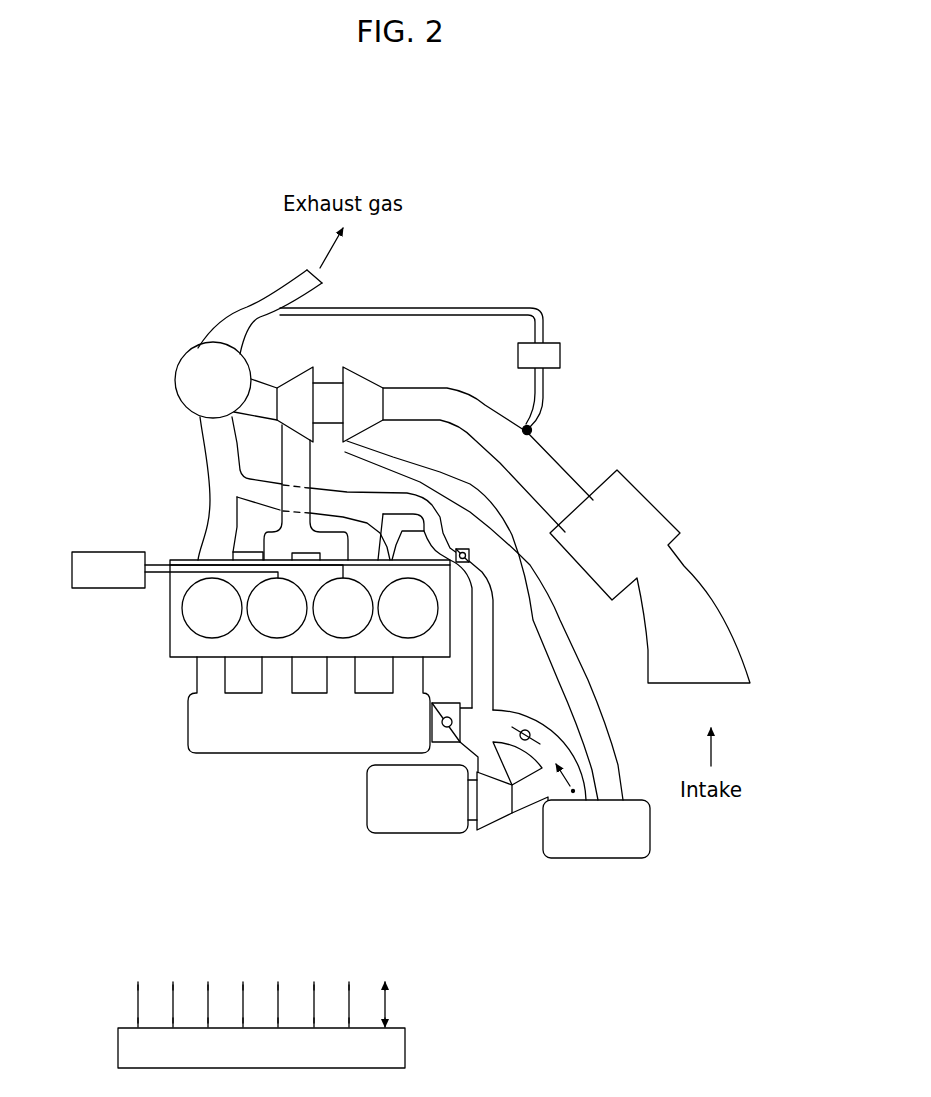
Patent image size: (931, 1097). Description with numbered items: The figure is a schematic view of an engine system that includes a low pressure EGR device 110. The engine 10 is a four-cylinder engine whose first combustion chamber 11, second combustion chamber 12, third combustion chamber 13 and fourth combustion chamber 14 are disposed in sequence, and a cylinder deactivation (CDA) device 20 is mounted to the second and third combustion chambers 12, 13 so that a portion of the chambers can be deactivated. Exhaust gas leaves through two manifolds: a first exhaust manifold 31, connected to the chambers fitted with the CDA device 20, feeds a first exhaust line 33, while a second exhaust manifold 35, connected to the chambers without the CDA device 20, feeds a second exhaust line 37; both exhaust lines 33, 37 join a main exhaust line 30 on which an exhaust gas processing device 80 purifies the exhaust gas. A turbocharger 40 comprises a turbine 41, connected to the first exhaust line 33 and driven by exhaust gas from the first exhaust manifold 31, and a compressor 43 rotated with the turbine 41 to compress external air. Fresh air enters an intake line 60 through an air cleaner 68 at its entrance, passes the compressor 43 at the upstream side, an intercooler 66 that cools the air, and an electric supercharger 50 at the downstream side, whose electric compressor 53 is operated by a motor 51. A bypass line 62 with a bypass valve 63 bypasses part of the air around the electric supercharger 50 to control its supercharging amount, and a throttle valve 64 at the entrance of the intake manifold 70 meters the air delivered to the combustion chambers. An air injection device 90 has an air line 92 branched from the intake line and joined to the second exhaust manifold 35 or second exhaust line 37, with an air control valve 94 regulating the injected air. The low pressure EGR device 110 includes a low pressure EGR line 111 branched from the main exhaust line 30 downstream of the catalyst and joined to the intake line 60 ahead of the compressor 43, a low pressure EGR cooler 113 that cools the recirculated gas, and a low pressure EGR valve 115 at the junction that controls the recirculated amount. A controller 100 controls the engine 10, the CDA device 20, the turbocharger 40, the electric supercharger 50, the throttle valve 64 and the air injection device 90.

The engine 10 is at (266, 684).
The first combustion chamber 11 is at (194, 637).
The second combustion chamber 12 is at (262, 638).
The third combustion chamber 13 is at (328, 638).
The fourth combustion chamber 14 is at (386, 638).
The cylinder deactivation (CDA) device 20 is at (108, 590).
The main exhaust line 30 is at (248, 300).
The first exhaust manifold 31 is at (283, 552).
The first exhaust line 33 is at (265, 387).
The second exhaust manifold 35 is at (212, 512).
The second exhaust line 37 is at (215, 438).
The turbocharger 40 is at (347, 338).
The turbine 41 is at (300, 372).
The compressor 43 is at (363, 376).
The electric supercharger 50 is at (439, 853).
The motor 51 is at (430, 835).
The electric compressor 53 is at (494, 833).
The intake line 60 is at (612, 738).
The bypass line 62 is at (499, 708).
The bypass valve 63 is at (545, 713).
The throttle valve 64 is at (444, 702).
The intercooler 66 is at (597, 859).
The air cleaner 68 is at (615, 472).
The intake manifold 70 is at (205, 754).
The exhaust gas processing device 80 is at (176, 356).
The air injection device 90 is at (414, 514).
The air line 92 is at (495, 603).
The air control valve 94 is at (463, 546).
The controller 100 is at (405, 1047).
The low pressure EGR device 110 is at (480, 355).
The low pressure EGR line 111 is at (510, 292).
The low pressure EGR cooler 113 is at (562, 355).
The low pressure EGR valve 115 is at (577, 406).